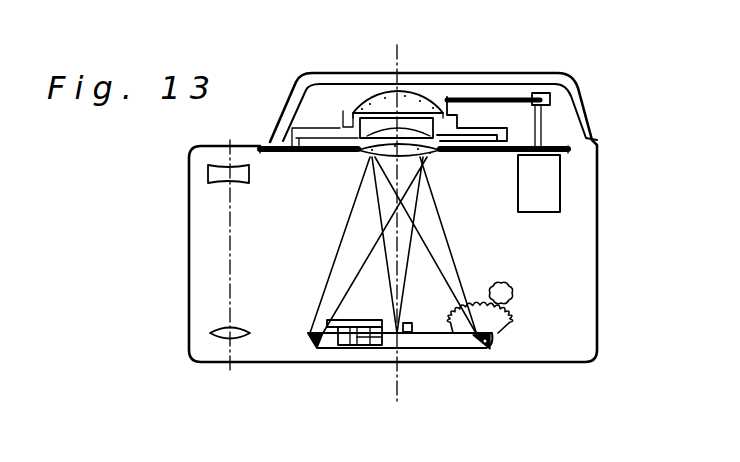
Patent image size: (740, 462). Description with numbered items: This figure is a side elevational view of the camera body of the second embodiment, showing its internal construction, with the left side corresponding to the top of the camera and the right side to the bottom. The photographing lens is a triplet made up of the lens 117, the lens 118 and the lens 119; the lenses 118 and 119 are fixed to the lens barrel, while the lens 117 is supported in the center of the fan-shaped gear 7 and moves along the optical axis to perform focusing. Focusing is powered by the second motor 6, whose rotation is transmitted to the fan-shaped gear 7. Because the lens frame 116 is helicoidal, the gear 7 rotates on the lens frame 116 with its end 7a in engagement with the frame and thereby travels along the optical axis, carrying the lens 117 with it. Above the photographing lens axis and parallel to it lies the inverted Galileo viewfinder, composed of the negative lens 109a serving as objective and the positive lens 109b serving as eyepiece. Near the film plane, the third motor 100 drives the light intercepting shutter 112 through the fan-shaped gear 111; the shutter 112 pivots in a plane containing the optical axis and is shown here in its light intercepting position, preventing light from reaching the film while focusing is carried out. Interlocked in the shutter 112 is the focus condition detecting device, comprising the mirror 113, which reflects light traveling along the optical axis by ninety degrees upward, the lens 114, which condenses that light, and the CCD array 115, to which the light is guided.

The lens frame 116 is at (344, 116).
The lens 117 is at (418, 101).
The end of fan-shaped gear 7a is at (470, 98).
The fan-shaped gear 7 is at (504, 97).
The second motor 6 is at (547, 178).
The lens 118 is at (433, 153).
The lens 119 is at (437, 162).
The third motor 100 is at (507, 283).
The fan-shaped gear 111 is at (497, 329).
The negative lens 109a is at (208, 173).
The positive lens 109b is at (210, 334).
The CCD array 115 is at (348, 347).
The lens 114 is at (382, 345).
The mirror 113 is at (401, 336).
The light intercepting shutter 112 is at (442, 346).